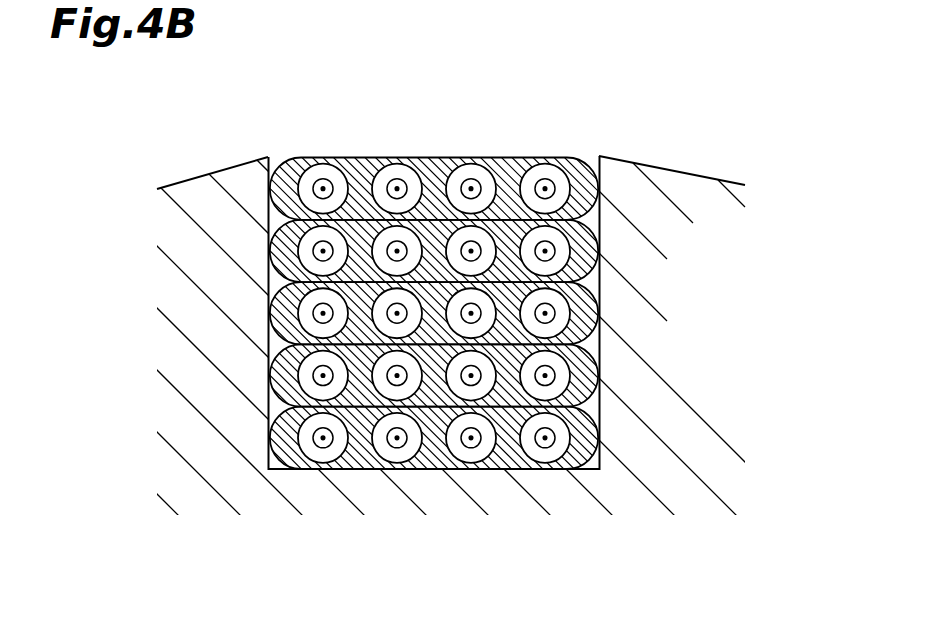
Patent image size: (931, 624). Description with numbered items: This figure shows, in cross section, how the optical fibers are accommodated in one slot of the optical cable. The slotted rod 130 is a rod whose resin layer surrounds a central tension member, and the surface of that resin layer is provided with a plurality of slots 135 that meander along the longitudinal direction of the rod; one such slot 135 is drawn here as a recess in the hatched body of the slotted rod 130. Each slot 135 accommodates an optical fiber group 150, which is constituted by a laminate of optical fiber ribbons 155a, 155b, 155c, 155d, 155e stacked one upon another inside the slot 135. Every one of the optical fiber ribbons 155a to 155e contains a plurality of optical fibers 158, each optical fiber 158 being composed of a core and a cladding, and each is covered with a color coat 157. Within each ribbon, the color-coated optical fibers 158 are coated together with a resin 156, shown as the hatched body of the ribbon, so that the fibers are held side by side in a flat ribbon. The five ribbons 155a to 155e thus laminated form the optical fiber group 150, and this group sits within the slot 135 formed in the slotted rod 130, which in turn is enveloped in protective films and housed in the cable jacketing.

The slotted rod 130 is at (717, 188).
The slot 135 is at (601, 168).
The optical fiber group 150 is at (513, 284).
The optical fiber ribbon 155a is at (473, 174).
The optical fiber ribbon 155b is at (600, 252).
The optical fiber ribbon 155c is at (600, 315).
The optical fiber ribbon 155d is at (600, 377).
The optical fiber ribbon 155e is at (600, 438).
The resin 156 is at (428, 162).
The color coat 157 is at (384, 171).
The optical fiber 158 is at (536, 172).